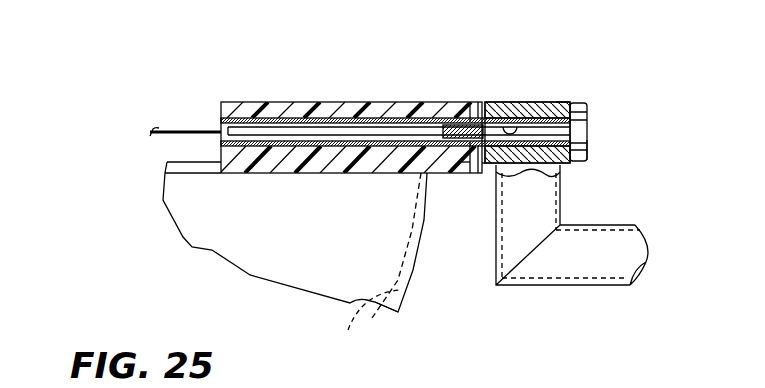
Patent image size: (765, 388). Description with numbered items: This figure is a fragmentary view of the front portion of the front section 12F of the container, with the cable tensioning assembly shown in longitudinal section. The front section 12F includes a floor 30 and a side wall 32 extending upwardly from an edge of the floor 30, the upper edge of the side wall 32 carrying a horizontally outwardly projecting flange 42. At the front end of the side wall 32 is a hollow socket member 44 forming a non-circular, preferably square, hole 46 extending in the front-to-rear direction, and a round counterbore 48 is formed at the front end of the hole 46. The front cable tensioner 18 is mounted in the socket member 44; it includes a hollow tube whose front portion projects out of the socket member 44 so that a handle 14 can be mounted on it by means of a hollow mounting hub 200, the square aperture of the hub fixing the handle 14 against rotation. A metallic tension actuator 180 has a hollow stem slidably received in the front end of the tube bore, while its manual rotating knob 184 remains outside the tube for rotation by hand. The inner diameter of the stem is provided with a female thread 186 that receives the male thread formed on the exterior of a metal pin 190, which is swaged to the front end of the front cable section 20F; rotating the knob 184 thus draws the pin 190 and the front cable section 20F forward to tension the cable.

The front cable tensioner 18 is at (412, 72).
The front cable section 20F is at (157, 128).
The flange 42 is at (193, 160).
The hollow socket member 44 is at (355, 103).
The hole 46 is at (273, 103).
The round counterbore 48 is at (478, 103).
The female thread 186 is at (522, 122).
The hollow mounting hub 200 is at (560, 103).
The manual rotating knob 184 is at (588, 108).
The tension actuator 180 is at (588, 152).
The handle 14 is at (628, 224).
The metal pin 190 is at (468, 163).
The side wall 32 is at (257, 270).
The floor 30 is at (357, 316).
The front section 12F is at (400, 311).